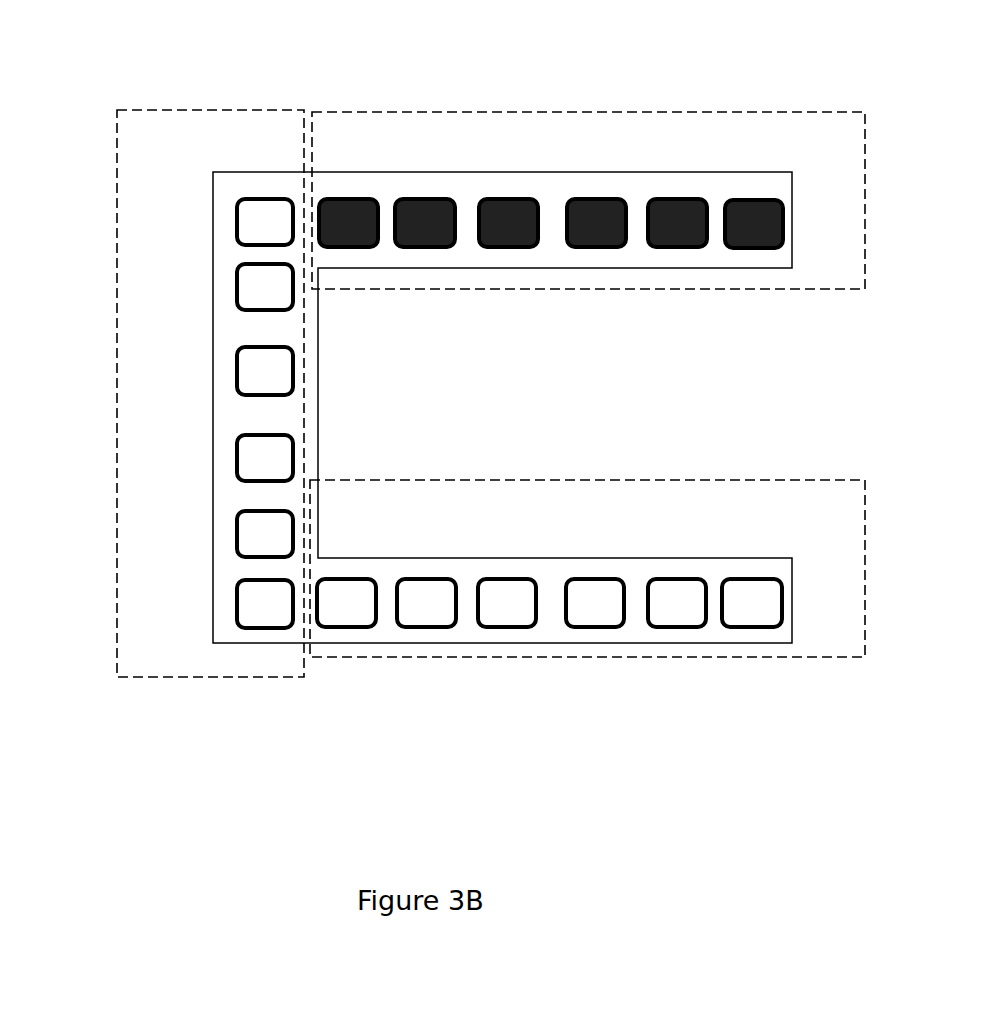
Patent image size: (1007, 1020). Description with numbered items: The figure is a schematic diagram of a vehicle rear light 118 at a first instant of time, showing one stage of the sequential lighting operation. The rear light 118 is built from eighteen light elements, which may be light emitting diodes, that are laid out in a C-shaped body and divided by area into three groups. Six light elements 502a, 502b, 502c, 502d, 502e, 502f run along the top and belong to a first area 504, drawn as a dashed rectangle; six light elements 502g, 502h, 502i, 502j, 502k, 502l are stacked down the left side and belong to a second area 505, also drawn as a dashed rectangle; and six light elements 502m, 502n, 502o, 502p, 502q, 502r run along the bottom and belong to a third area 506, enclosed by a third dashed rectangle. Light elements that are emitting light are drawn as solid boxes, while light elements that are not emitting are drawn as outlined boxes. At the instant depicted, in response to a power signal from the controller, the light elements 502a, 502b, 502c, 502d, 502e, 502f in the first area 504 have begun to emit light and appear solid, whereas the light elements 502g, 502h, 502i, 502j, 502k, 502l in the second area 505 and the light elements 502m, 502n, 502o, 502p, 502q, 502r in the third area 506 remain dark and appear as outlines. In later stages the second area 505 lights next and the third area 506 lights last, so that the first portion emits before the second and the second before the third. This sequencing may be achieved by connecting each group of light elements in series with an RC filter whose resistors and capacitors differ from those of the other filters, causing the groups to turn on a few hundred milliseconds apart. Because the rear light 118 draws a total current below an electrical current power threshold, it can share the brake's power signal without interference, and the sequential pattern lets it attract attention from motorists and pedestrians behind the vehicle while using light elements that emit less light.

The rear light 118 is at (261, 51).
The first area 504 is at (865, 113).
The second area 505 is at (116, 407).
The third area 506 is at (865, 555).
The light element 502a is at (742, 200).
The light element 502b is at (673, 197).
The light element 502c is at (595, 197).
The light element 502d is at (503, 197).
The light element 502e is at (420, 197).
The light element 502f is at (345, 197).
The light element 502g is at (263, 197).
The light element 502h is at (235, 295).
The light element 502i is at (235, 379).
The light element 502j is at (235, 461).
The light element 502k is at (235, 534).
The light element 502l is at (235, 605).
The light element 502m is at (343, 577).
The light element 502n is at (420, 577).
The light element 502o is at (507, 577).
The light element 502p is at (590, 577).
The light element 502q is at (675, 577).
The light element 502r is at (748, 577).